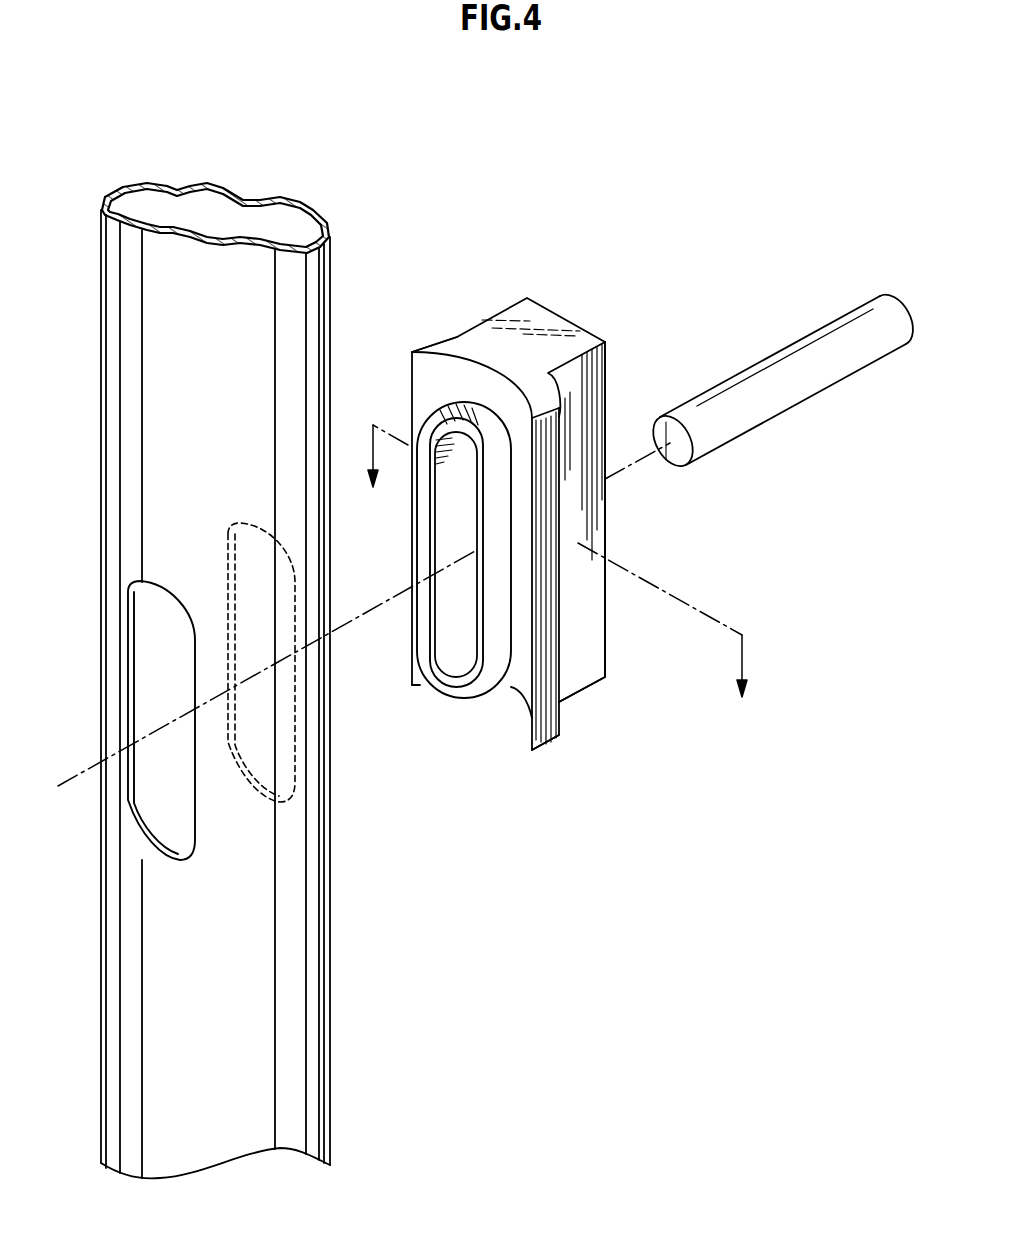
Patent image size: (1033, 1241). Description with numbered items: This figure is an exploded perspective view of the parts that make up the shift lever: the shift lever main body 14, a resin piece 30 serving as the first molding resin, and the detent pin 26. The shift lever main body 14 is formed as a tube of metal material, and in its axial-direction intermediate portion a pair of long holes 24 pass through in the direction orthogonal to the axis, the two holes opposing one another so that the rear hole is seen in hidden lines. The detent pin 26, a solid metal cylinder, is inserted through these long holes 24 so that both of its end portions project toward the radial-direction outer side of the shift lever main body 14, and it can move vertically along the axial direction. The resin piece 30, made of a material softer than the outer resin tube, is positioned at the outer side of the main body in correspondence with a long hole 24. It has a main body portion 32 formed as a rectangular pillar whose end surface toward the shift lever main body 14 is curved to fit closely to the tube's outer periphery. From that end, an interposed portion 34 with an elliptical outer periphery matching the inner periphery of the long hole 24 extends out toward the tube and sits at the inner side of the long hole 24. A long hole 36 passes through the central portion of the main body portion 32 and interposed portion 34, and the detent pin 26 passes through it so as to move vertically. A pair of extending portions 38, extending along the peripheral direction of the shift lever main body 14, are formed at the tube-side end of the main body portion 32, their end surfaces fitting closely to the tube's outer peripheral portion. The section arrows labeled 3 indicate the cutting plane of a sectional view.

The tubular post 14 is at (113, 377).
The slot 24 is at (127, 647).
The pin 26 is at (787, 397).
The insert block 30 is at (501, 302).
The side face of insert 32 is at (597, 644).
The boss 34 is at (457, 697).
The opening 36 is at (453, 628).
The edge flange 38 is at (437, 343).
The section line of FIG. 3 is at (557, 577).